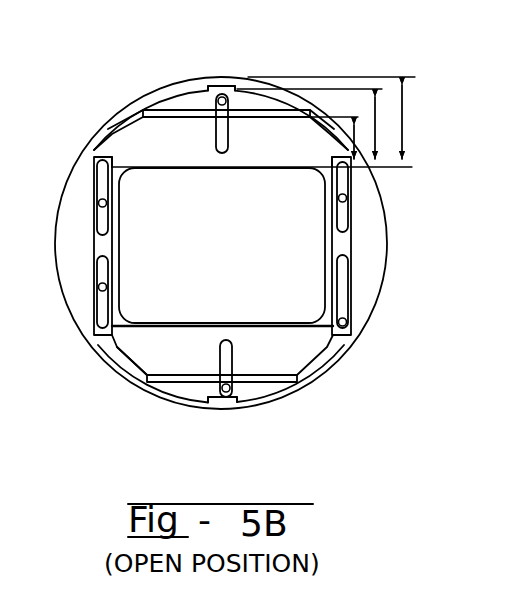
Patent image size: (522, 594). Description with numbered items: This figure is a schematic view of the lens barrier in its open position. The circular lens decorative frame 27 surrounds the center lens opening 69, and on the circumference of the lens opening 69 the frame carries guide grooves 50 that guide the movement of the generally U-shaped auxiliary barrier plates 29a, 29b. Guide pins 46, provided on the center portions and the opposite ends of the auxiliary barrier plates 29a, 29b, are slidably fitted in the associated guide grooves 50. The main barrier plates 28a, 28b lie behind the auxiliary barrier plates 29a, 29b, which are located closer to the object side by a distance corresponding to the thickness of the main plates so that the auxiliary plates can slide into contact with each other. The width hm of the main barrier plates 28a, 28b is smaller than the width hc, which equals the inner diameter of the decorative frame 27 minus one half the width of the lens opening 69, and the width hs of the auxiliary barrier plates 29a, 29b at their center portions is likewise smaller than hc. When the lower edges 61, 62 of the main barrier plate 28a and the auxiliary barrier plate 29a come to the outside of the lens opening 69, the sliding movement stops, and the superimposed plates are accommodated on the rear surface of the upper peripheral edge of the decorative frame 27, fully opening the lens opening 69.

The lens decorative frame 27 is at (362, 305).
The main barrier plate 28a is at (175, 78).
The main barrier plate 28b is at (182, 401).
The auxiliary barrier plate 29a is at (234, 89).
The auxiliary barrier plate 29b is at (195, 380).
The guide pins 46 is at (222, 96).
The guide grooves 50 is at (220, 138).
The lower edge 61 is at (175, 303).
The lower edge 62 is at (260, 169).
The lens opening 69 is at (247, 285).
The width of the main barrier plates hm is at (388, 178).
The width hc is at (418, 180).
The width of the auxiliary barrier plates hs is at (382, 176).